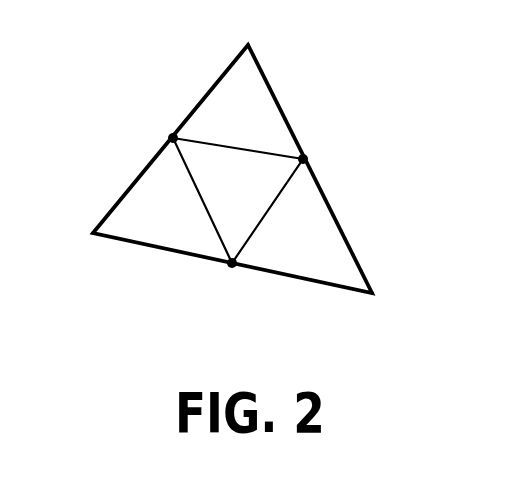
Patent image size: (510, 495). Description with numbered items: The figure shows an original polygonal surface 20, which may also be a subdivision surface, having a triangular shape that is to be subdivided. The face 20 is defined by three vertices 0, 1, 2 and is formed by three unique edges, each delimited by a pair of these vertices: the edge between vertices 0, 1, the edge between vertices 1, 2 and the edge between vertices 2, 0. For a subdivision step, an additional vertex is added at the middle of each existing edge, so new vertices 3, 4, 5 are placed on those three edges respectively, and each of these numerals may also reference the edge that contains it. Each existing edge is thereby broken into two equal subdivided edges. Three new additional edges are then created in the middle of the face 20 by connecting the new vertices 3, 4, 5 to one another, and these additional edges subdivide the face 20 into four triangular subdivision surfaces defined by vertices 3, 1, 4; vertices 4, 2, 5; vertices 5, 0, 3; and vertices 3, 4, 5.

The original polygonal surface 20 is at (302, 127).
The vertex 0 is at (81, 247).
The vertex 1 is at (240, 24).
The vertex 2 is at (379, 304).
The new vertex 3 is at (161, 126).
The new vertex 4 is at (313, 151).
The new vertex 5 is at (235, 282).